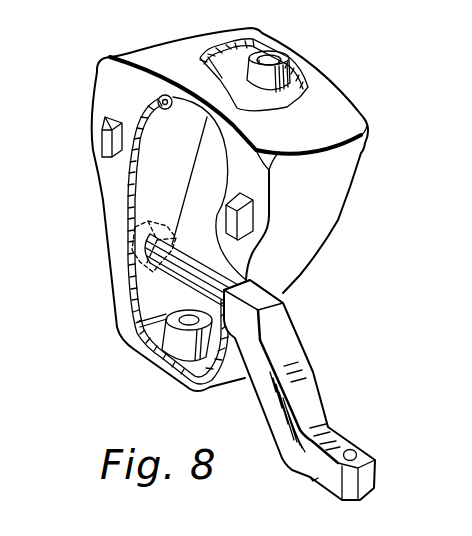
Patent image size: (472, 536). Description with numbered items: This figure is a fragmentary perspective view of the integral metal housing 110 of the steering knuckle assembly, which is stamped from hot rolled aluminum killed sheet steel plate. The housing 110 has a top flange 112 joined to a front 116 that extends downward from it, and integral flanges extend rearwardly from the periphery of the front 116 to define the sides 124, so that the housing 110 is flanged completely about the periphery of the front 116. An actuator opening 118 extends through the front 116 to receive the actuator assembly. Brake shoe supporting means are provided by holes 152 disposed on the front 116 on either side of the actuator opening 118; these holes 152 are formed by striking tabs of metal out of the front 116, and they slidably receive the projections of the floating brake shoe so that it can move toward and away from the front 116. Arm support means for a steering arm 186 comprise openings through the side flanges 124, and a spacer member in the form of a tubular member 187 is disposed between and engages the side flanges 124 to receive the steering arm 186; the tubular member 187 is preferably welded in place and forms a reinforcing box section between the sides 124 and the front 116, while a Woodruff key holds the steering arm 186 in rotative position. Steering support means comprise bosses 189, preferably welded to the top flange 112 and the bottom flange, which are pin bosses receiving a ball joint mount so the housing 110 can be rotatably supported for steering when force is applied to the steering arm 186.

The housing 110 is at (351, 86).
The top flange 112 is at (180, 52).
The front 116 is at (118, 85).
The actuator opening 118 is at (131, 170).
The sides 124 is at (321, 236).
The holes 152 is at (102, 143).
The steering arm 186 is at (313, 405).
The tubular member 187 is at (172, 267).
The bosses 189 is at (262, 53).